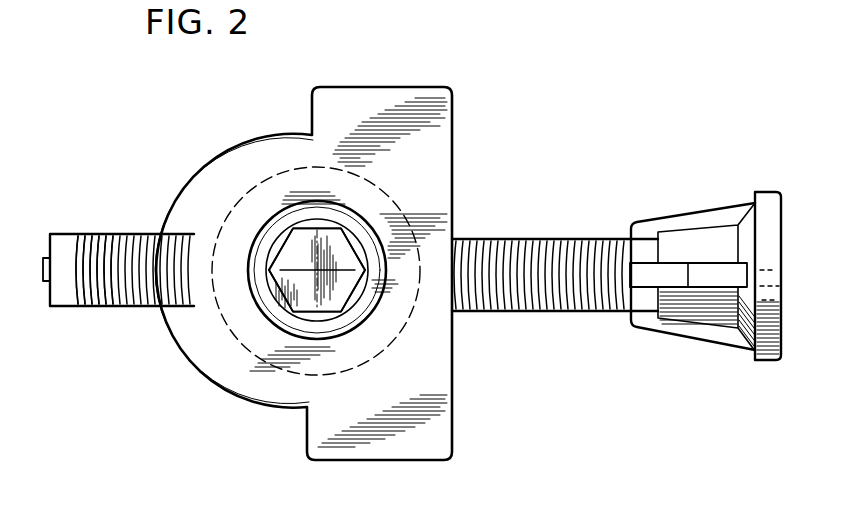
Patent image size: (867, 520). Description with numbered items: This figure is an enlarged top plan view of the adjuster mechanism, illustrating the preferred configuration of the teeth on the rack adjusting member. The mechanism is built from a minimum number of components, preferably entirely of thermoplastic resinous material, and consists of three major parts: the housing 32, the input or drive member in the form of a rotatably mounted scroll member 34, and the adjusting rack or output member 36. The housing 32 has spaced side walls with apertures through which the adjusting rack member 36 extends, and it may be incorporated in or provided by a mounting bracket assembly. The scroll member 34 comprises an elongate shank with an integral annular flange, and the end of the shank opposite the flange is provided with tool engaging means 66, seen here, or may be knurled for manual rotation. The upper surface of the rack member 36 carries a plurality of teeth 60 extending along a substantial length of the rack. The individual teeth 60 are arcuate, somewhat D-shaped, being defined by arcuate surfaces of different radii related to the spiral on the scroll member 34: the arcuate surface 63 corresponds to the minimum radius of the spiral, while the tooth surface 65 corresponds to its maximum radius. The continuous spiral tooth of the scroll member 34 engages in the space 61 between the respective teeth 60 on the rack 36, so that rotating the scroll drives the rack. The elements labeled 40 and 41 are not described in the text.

The housing 32 is at (298, 429).
The scroll member 34 is at (302, 281).
The adjusting rack member 36 is at (147, 308).
The knob 40 is at (690, 213).
The direction arrow 41 is at (803, 0).
The teeth 60 is at (80, 258).
The space between teeth 61 is at (97, 313).
The arcuate surface 63 is at (78, 281).
The tooth surface 65 is at (84, 290).
The tool engaging means 66 is at (326, 226).